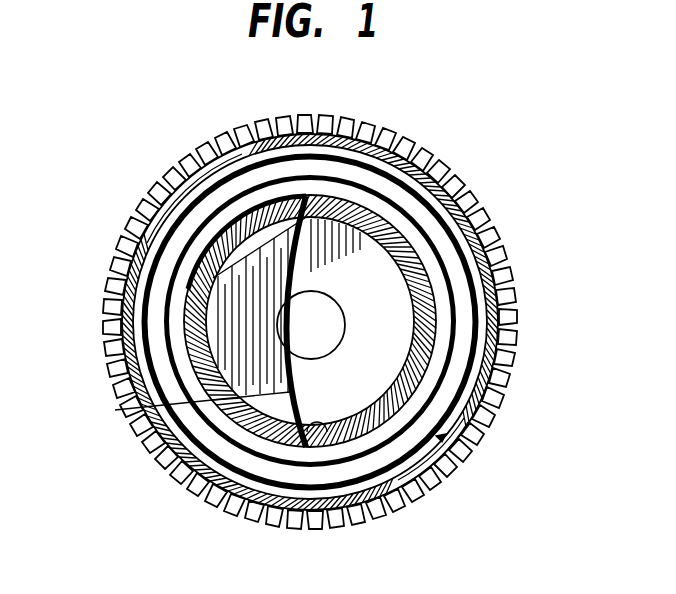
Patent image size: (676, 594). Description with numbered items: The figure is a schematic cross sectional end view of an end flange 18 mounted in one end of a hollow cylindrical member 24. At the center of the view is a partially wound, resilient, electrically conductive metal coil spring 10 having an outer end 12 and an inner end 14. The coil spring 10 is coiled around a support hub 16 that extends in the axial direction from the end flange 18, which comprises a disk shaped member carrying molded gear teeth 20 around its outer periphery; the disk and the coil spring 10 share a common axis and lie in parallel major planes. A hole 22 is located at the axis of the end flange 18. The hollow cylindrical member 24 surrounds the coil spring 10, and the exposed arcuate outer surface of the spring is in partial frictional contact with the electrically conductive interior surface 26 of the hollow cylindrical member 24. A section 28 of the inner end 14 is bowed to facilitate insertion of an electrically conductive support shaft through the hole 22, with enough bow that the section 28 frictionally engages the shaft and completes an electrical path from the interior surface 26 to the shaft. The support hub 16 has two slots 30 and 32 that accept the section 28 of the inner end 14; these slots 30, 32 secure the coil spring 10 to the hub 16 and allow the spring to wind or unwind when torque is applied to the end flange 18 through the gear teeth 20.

The coil spring 10 is at (477, 318).
The outer end 12 is at (488, 428).
The inner end 14 is at (306, 448).
The support hub 16 is at (432, 285).
The end flange 18 is at (386, 360).
The gear teeth 20 is at (466, 185).
The hole 22 is at (336, 299).
The hollow cylindrical member 24 is at (207, 172).
The interior surface 26 is at (388, 137).
The section 28 is at (143, 427).
The slot 30 is at (300, 225).
The slot 32 is at (388, 498).